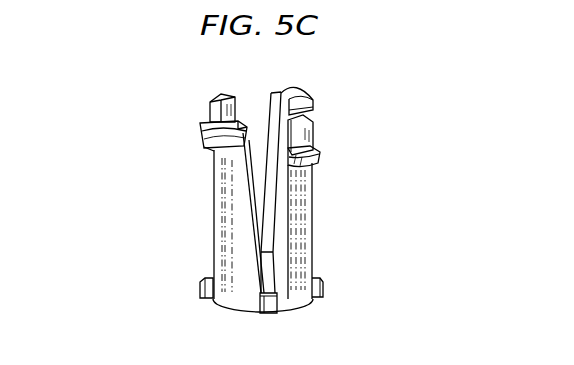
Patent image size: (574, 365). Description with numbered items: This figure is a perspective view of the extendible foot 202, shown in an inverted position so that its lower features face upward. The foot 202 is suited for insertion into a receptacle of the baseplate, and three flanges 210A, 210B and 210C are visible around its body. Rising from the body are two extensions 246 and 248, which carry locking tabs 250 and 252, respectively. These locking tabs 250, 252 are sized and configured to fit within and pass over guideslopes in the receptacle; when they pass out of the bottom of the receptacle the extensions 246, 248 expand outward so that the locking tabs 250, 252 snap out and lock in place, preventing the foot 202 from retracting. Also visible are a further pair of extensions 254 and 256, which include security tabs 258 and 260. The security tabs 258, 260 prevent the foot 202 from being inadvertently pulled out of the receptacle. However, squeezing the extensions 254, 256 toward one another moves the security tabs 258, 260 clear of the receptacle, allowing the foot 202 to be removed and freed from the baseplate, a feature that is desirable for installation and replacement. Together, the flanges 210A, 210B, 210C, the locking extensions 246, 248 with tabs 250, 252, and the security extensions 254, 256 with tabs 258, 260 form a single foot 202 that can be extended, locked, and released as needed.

The extendible foot 202 is at (207, 193).
The extension 246 is at (212, 102).
The extension 248 is at (303, 134).
The locking tab 250 is at (200, 128).
The locking tab 252 is at (308, 166).
The extension 254 is at (269, 108).
The extension 256 is at (226, 250).
The security tab 258 is at (305, 90).
The security tab 260 is at (207, 148).
The flange 210A is at (324, 290).
The flange 210B is at (267, 314).
The flange 210C is at (199, 290).